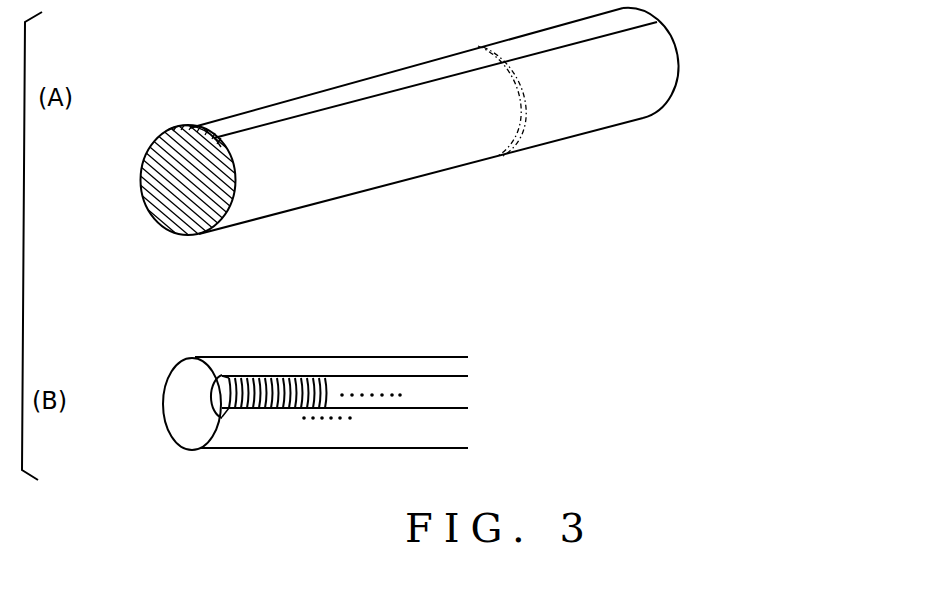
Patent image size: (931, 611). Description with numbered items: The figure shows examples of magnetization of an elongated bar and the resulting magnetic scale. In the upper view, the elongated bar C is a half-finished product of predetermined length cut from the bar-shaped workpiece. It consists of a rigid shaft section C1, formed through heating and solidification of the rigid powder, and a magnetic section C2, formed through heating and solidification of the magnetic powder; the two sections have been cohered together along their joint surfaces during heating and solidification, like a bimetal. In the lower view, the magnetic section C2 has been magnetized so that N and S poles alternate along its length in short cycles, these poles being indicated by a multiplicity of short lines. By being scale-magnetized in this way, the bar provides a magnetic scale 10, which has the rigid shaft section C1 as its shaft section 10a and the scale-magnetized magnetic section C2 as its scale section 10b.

The elongated bar C is at (410, 128).
The rigid shaft section C1 is at (330, 163).
The magnetic section C2 is at (283, 110).
The magnetic scale 10 is at (328, 400).
The shaft section 10a is at (297, 432).
The scale section 10b is at (420, 395).